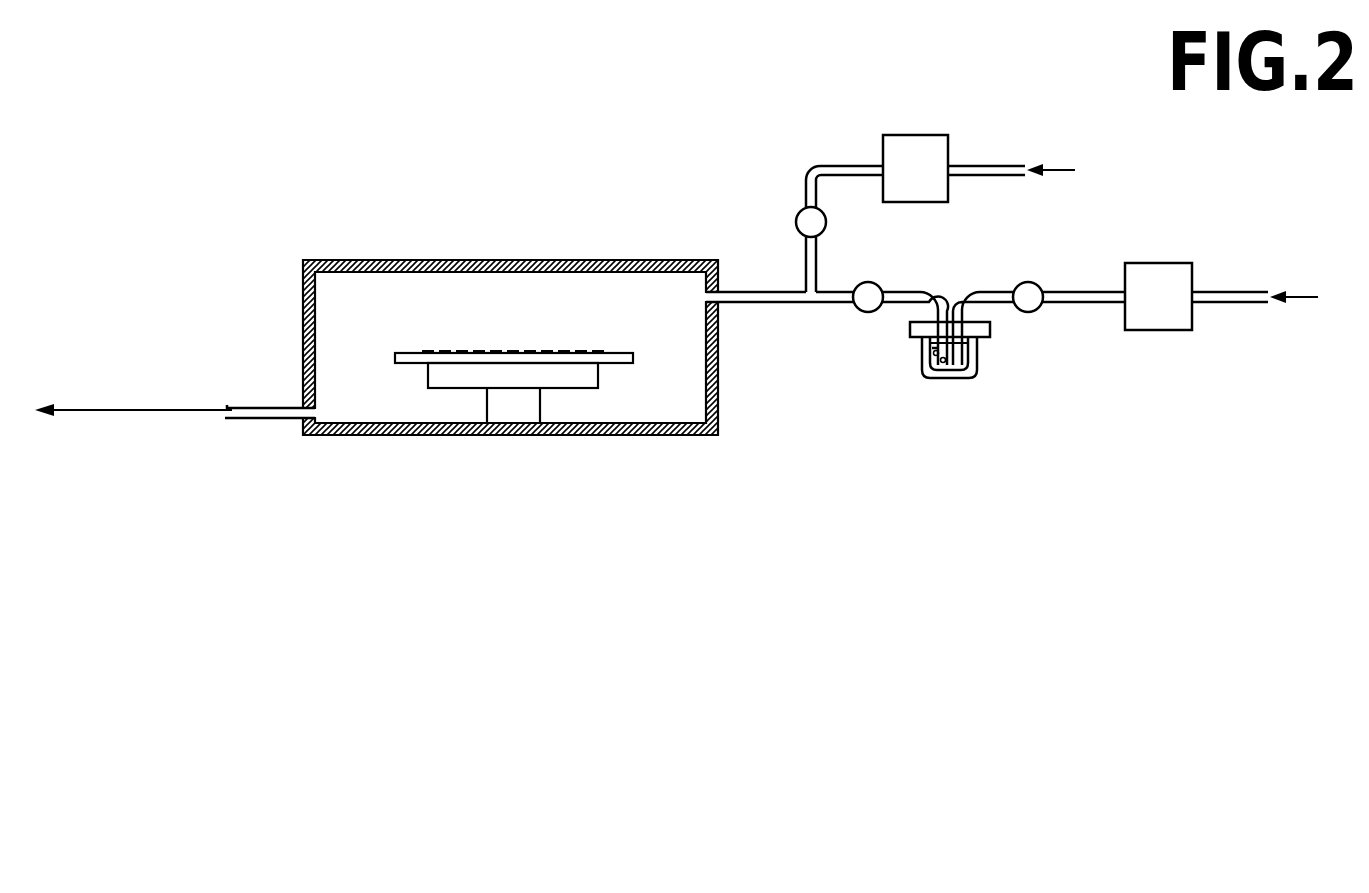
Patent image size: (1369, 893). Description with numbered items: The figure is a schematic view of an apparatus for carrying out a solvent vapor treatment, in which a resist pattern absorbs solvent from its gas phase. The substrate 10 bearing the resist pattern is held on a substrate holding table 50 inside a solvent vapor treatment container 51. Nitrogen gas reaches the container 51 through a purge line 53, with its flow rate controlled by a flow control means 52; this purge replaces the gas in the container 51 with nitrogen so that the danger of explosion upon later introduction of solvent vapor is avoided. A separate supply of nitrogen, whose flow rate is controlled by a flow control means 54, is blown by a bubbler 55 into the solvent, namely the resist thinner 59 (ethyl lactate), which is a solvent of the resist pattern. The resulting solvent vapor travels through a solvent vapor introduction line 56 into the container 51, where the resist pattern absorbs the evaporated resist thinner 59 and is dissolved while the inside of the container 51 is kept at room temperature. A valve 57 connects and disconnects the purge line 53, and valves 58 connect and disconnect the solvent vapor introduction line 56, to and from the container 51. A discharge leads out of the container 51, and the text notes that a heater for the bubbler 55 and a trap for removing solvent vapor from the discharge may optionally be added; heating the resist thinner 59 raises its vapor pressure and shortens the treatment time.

The substrate 10 is at (408, 354).
The substrate holding table 50 is at (594, 372).
The solvent vapor treatment container 51 is at (576, 260).
The flow control means 52 is at (916, 142).
The purge line 53 is at (805, 185).
The flow control means 54 is at (1162, 323).
The bubbler 55 is at (952, 380).
The solvent vapor introduction line 56 is at (827, 303).
The valve 57 is at (797, 223).
The valve 58 is at (871, 290).
The resist thinner 59 is at (962, 358).